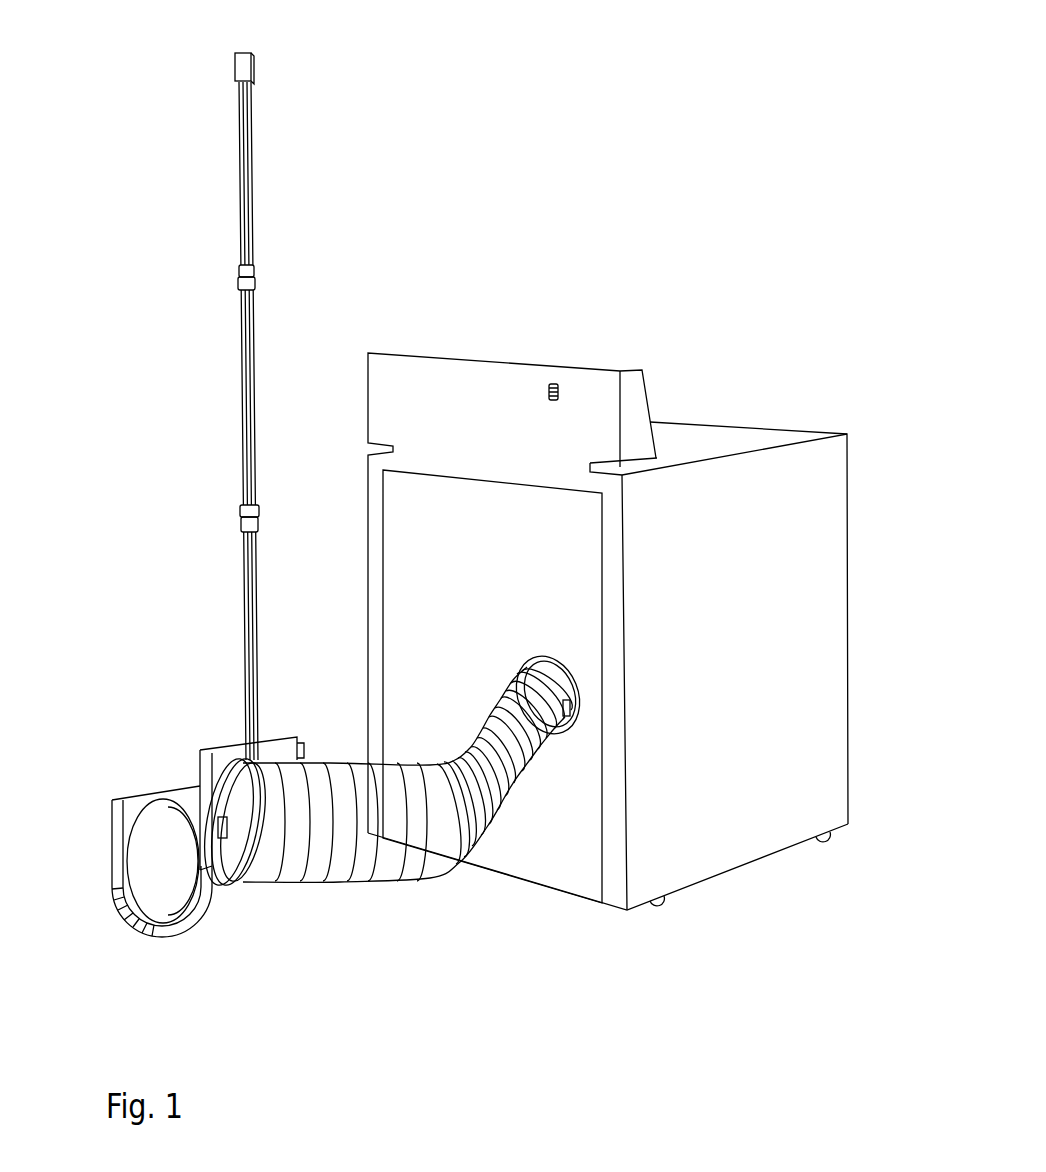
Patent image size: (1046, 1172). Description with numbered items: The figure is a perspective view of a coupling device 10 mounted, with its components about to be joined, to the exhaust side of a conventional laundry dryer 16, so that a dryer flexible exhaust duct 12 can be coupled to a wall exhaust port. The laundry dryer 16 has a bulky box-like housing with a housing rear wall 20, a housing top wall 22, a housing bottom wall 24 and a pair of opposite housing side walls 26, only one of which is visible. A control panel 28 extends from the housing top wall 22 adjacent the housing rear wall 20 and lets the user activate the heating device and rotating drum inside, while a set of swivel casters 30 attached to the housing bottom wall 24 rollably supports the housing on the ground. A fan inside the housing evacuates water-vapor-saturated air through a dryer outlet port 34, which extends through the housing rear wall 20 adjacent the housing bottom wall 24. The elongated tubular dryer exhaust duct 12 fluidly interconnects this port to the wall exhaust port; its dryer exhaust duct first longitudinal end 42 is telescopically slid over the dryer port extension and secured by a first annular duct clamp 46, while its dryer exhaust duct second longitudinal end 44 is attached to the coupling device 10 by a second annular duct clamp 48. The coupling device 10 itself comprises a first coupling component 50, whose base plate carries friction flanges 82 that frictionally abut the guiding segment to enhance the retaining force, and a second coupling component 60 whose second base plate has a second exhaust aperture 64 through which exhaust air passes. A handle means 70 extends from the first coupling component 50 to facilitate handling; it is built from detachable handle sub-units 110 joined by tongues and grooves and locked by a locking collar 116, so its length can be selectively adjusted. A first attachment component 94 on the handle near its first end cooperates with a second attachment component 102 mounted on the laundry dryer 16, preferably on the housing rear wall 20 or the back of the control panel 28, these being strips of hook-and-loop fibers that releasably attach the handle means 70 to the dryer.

The coupling device 10 is at (134, 762).
The dryer flexible exhaust duct 12 is at (382, 903).
The laundry dryer 16 is at (862, 452).
The housing rear wall 20 is at (573, 860).
The housing top wall 22 is at (740, 440).
The housing bottom wall 24 is at (702, 882).
The housing side walls 26 is at (798, 660).
The control panel 28 is at (662, 398).
The swivel casters 30 is at (660, 905).
The dryer outlet port 34 is at (590, 731).
The dryer exhaust duct first longitudinal end 42 is at (518, 646).
The dryer exhaust duct second longitudinal end 44 is at (249, 890).
The first annular duct clamp 46 is at (557, 668).
The second annular duct clamp 48 is at (227, 830).
The first coupling component 50 is at (220, 721).
The second coupling component 60 is at (78, 866).
The second exhaust aperture 64 is at (177, 903).
The handle means 70 is at (287, 120).
The friction flanges 82 is at (195, 768).
The first attachment component 94 is at (233, 68).
The second attachment component 102 is at (553, 383).
The handle sub-units 110 is at (243, 468).
The locking collar 116 is at (237, 285).